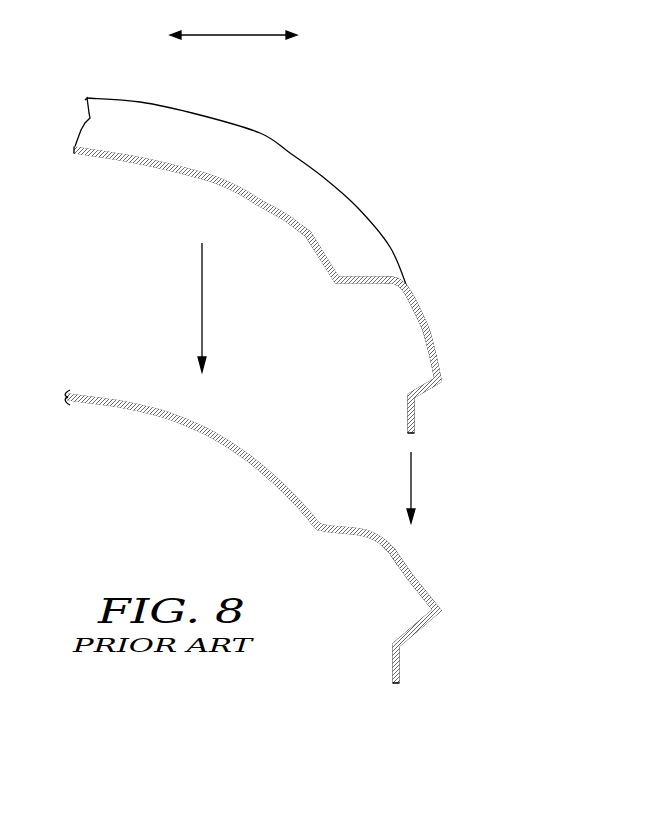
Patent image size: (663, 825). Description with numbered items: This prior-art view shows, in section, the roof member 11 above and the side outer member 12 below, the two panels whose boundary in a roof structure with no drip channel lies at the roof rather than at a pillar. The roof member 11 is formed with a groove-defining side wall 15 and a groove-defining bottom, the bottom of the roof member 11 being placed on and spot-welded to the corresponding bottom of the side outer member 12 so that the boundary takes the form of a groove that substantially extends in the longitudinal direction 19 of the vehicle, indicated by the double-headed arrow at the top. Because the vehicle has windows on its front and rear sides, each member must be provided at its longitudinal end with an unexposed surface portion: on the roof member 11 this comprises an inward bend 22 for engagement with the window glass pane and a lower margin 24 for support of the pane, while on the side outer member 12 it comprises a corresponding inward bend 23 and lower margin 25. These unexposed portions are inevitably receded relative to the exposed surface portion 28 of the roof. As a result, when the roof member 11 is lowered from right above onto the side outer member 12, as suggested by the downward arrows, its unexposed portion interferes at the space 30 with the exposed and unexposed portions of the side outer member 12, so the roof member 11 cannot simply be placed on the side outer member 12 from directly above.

The roof member 11 is at (309, 253).
The side outer member 12 is at (301, 537).
The groove-defining side wall 15 is at (278, 165).
The longitudinal direction 19 is at (233, 36).
The inward bend 22 is at (423, 391).
The inward bend 23 is at (423, 632).
The lower margin 24 is at (447, 416).
The lower margin 25 is at (432, 664).
The exposed surface portion 28 is at (427, 318).
The space 30 is at (418, 548).